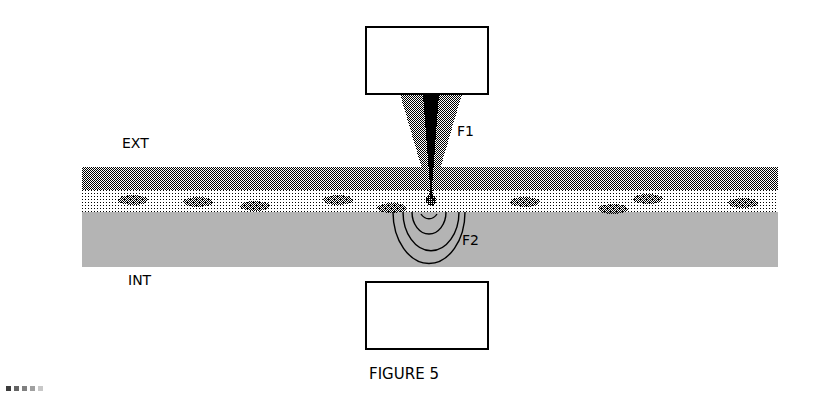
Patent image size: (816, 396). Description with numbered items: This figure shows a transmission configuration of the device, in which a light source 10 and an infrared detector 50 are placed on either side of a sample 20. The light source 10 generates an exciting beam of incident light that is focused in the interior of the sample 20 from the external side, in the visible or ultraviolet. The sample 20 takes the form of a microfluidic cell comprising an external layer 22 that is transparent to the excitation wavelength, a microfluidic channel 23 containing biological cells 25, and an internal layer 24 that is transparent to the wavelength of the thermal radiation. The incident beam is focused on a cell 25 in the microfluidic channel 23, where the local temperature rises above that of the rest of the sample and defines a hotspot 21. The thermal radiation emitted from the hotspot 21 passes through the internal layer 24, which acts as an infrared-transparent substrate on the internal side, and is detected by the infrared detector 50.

The light source 10 is at (427, 60).
The sample 20 is at (430, 153).
The hotspot 21 is at (446, 191).
The external layer 22 is at (269, 154).
The microfluidic channel 23 is at (622, 176).
The internal layer 24 is at (691, 203).
The biological cells 25 is at (204, 187).
The infrared detector 50 is at (427, 315).